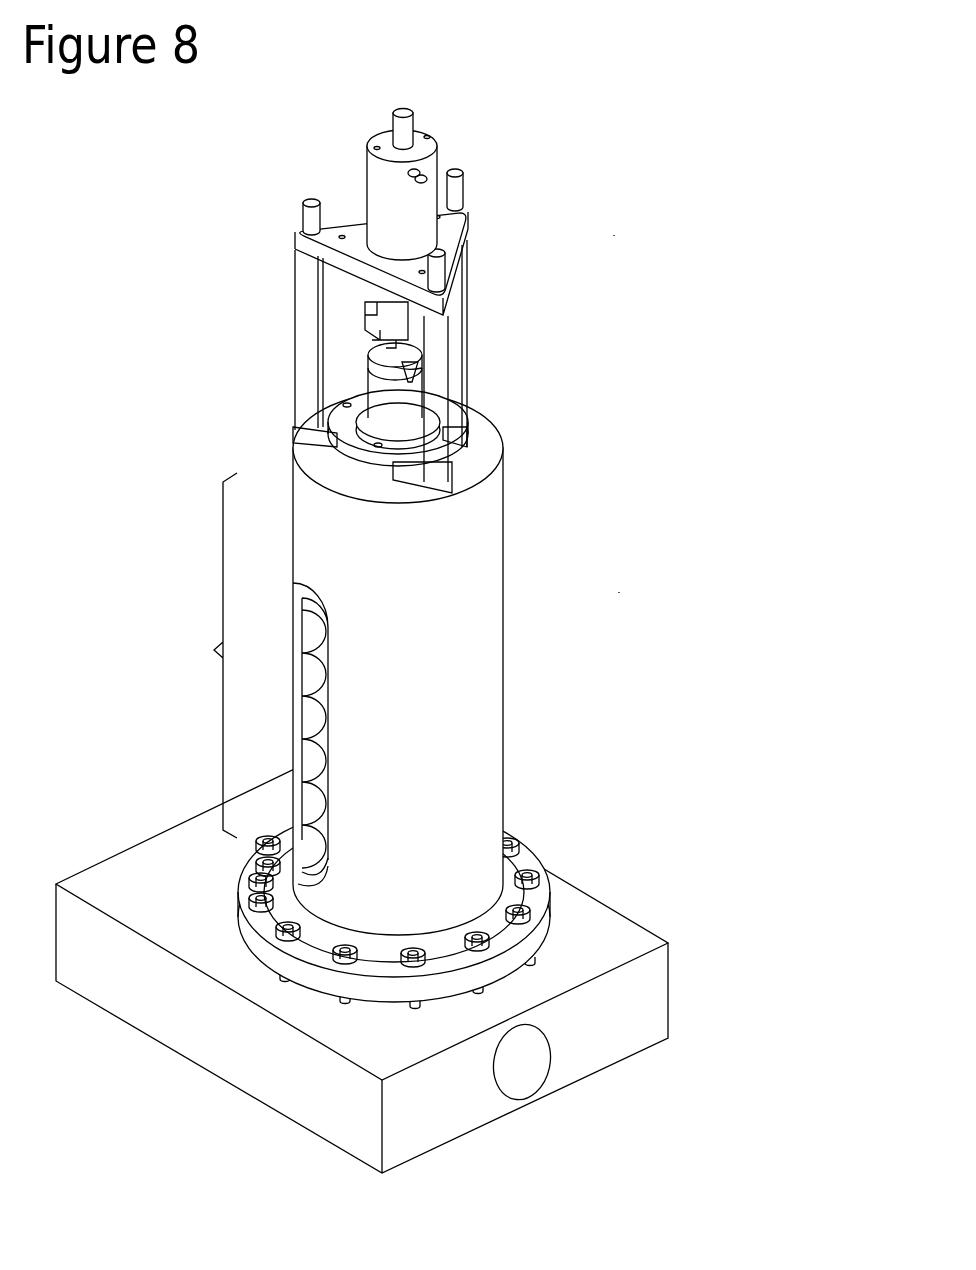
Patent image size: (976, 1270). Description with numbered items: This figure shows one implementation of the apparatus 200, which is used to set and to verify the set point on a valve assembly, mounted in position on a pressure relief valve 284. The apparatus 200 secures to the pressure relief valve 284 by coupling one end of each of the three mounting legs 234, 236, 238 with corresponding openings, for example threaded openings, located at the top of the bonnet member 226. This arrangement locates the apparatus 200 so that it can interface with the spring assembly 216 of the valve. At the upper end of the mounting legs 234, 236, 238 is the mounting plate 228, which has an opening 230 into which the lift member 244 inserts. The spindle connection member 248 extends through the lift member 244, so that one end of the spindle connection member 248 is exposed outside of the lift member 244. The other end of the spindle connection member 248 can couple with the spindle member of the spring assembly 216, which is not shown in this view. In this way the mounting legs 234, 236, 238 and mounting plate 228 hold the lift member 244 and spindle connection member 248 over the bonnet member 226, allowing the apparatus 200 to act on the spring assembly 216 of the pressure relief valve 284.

The apparatus 200 is at (614, 235).
The spring assembly 216 is at (214, 649).
The bonnet member 226 is at (505, 550).
The mounting plate 228 is at (453, 225).
The opening 230 is at (358, 232).
The mounting leg 234 is at (437, 390).
The mounting leg 236 is at (313, 342).
The mounting leg 238 is at (460, 337).
The lift member 244 is at (440, 138).
The spindle connection member 248 is at (412, 122).
The pressure relief valve 284 is at (619, 592).